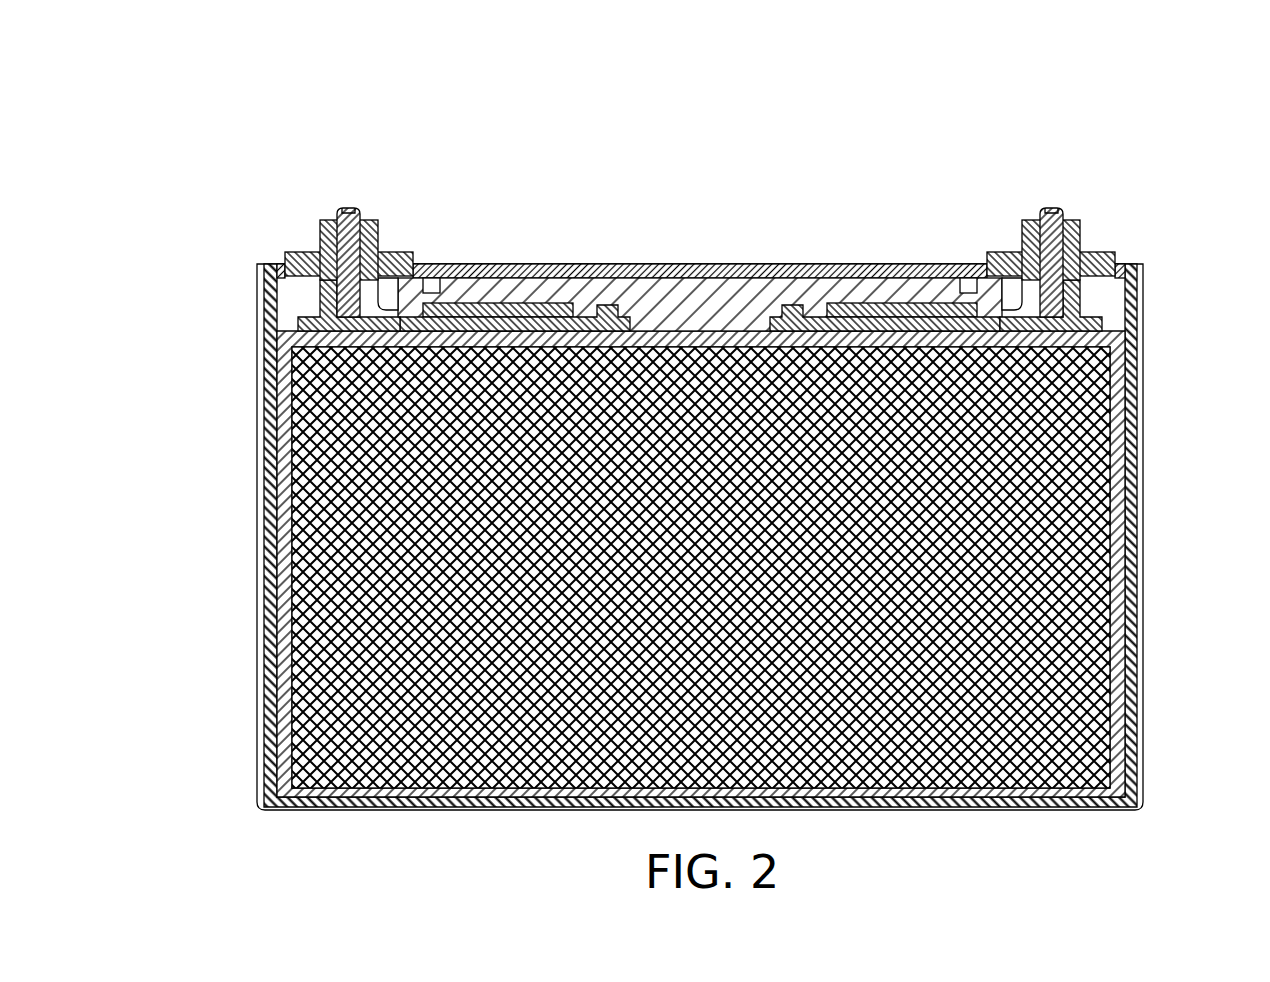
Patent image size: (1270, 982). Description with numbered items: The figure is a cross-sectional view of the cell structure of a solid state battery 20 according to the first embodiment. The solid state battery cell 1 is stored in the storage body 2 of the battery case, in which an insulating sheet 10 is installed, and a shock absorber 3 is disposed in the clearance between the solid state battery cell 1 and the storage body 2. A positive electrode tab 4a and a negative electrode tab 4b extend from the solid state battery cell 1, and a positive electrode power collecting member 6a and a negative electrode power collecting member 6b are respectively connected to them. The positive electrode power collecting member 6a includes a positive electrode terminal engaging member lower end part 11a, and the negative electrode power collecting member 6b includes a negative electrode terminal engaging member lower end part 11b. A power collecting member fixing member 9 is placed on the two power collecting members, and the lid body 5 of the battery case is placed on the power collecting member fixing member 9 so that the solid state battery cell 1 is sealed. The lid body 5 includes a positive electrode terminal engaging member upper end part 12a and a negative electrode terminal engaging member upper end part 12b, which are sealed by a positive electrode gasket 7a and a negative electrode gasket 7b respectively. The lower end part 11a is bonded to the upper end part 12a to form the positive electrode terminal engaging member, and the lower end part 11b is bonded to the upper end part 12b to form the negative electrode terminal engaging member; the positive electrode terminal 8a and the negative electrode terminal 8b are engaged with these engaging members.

The solid state battery 20 is at (1106, 120).
The solid state battery cell 1 is at (312, 460).
The storage body 2 is at (259, 675).
The shock absorber 3 is at (270, 596).
The insulating sheet 10 is at (285, 520).
The lid body 5 is at (724, 266).
The power collecting member fixing member 9 is at (645, 302).
The positive electrode tab 4a is at (458, 305).
The negative electrode tab 4b is at (858, 307).
The positive electrode power collecting member 6a is at (520, 318).
The negative electrode power collecting member 6b is at (907, 323).
The positive electrode gasket 7a is at (300, 262).
The negative electrode gasket 7b is at (1105, 262).
The positive electrode terminal 8a is at (342, 243).
The negative electrode terminal 8b is at (1055, 243).
The positive electrode terminal engaging member lower end part 11a is at (322, 298).
The negative electrode terminal engaging member lower end part 11b is at (1077, 297).
The positive electrode terminal engaging member upper end part 12a is at (326, 224).
The negative electrode terminal engaging member upper end part 12b is at (1030, 224).